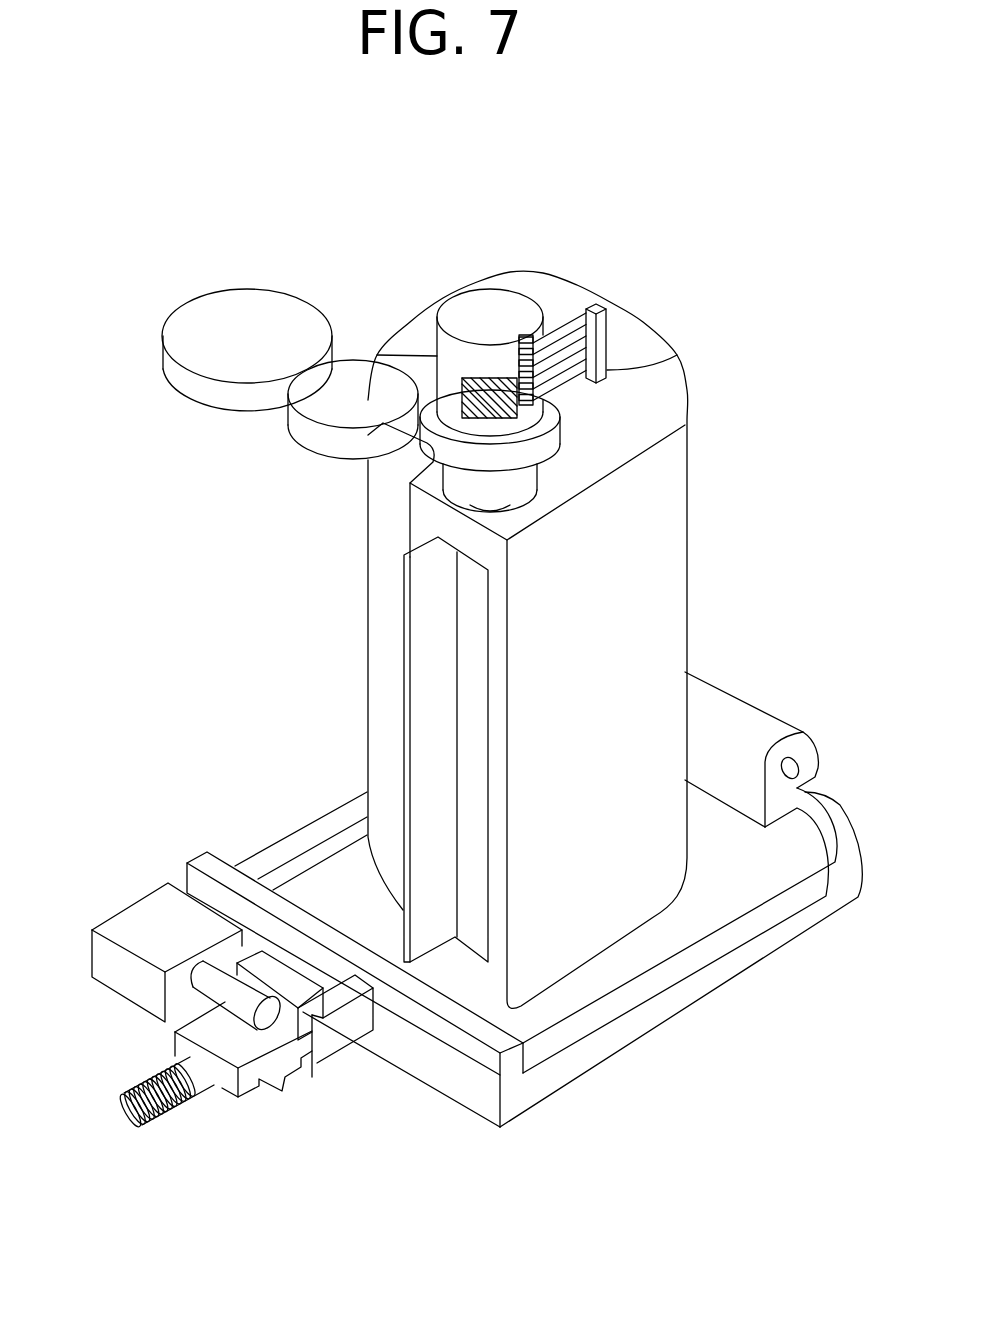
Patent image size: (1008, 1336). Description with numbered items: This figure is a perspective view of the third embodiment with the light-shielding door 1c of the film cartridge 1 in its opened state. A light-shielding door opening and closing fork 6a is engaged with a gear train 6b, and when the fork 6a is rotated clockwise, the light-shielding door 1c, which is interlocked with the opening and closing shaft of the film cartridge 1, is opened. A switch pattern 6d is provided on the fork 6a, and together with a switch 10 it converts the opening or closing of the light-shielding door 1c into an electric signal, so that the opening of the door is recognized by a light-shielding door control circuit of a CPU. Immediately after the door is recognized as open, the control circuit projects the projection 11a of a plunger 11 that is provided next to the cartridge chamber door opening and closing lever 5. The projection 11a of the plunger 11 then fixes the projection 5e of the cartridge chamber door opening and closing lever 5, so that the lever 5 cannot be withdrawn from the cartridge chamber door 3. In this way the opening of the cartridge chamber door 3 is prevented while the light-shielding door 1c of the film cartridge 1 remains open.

The film cartridge 1 is at (673, 475).
The light-shielding door 1c is at (420, 657).
The cartridge chamber door 3 is at (843, 900).
The cartridge chamber door opening and closing lever 5 is at (248, 1077).
The projection 5e is at (310, 1017).
The light-shielding door opening and closing fork 6a is at (480, 303).
The gear train 6b is at (357, 370).
The switch pattern 6d is at (495, 383).
The switch 10 is at (604, 308).
The plunger 11 is at (137, 905).
The projection 11a is at (220, 990).